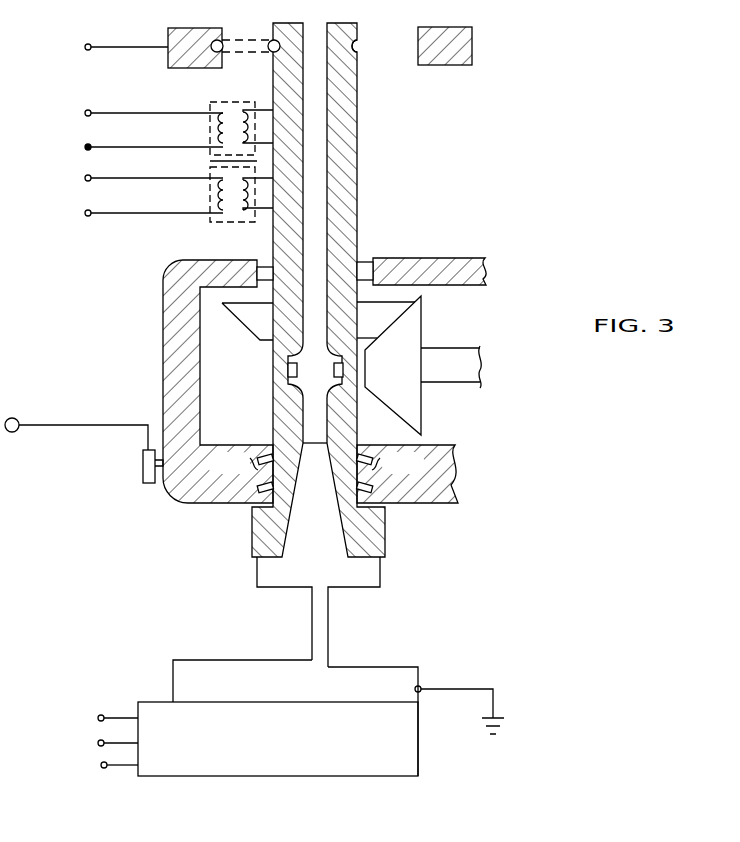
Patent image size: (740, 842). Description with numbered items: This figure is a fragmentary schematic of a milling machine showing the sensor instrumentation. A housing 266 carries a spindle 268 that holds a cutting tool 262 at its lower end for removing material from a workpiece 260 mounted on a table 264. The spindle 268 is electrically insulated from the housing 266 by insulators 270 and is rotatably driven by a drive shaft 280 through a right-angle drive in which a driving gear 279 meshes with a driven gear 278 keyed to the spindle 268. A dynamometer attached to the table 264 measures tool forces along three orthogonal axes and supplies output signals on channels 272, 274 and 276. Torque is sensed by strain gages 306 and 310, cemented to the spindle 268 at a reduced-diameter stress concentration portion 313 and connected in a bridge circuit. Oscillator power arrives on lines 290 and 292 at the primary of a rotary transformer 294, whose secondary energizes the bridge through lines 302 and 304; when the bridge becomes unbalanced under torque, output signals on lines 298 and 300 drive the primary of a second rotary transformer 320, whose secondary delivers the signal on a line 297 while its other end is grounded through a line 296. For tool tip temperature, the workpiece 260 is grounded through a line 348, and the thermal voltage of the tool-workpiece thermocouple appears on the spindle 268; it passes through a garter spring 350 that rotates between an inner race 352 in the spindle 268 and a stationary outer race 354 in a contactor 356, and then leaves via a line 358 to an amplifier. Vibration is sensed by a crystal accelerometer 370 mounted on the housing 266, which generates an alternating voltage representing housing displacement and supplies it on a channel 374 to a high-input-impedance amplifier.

The workpiece 260 is at (385, 668).
The cutting tool 262 is at (328, 613).
The table 264 is at (400, 776).
The housing 266 is at (163, 366).
The spindle 268 is at (358, 161).
The insulators 270 is at (264, 262).
The channel 272 is at (113, 717).
The channel 274 is at (108, 742).
The channel 276 is at (107, 768).
The driven gear 278 is at (250, 330).
The driving gear 279 is at (413, 330).
The drive shaft 280 is at (474, 384).
The line 290 is at (107, 178).
The line 292 is at (107, 213).
The rotary transformer 294 is at (212, 222).
The line 296 is at (107, 147).
The line 297 is at (105, 113).
The line 298 is at (265, 108).
The line 300 is at (218, 134).
The line 302 is at (210, 161).
The line 304 is at (257, 222).
The strain gage 306 is at (288, 372).
The strain gage 310 is at (344, 370).
The reduced-diameter stress concentration portion 313 is at (285, 353).
The second rotary transformer 320 is at (250, 102).
The line 348 is at (475, 689).
The garter spring 350 is at (250, 40).
The inner race 352 is at (359, 46).
The outer race 354 is at (418, 42).
The contactor 356 is at (168, 58).
The line 358 is at (91, 47).
The crystal accelerometer 370 is at (148, 484).
The channel 374 is at (96, 427).